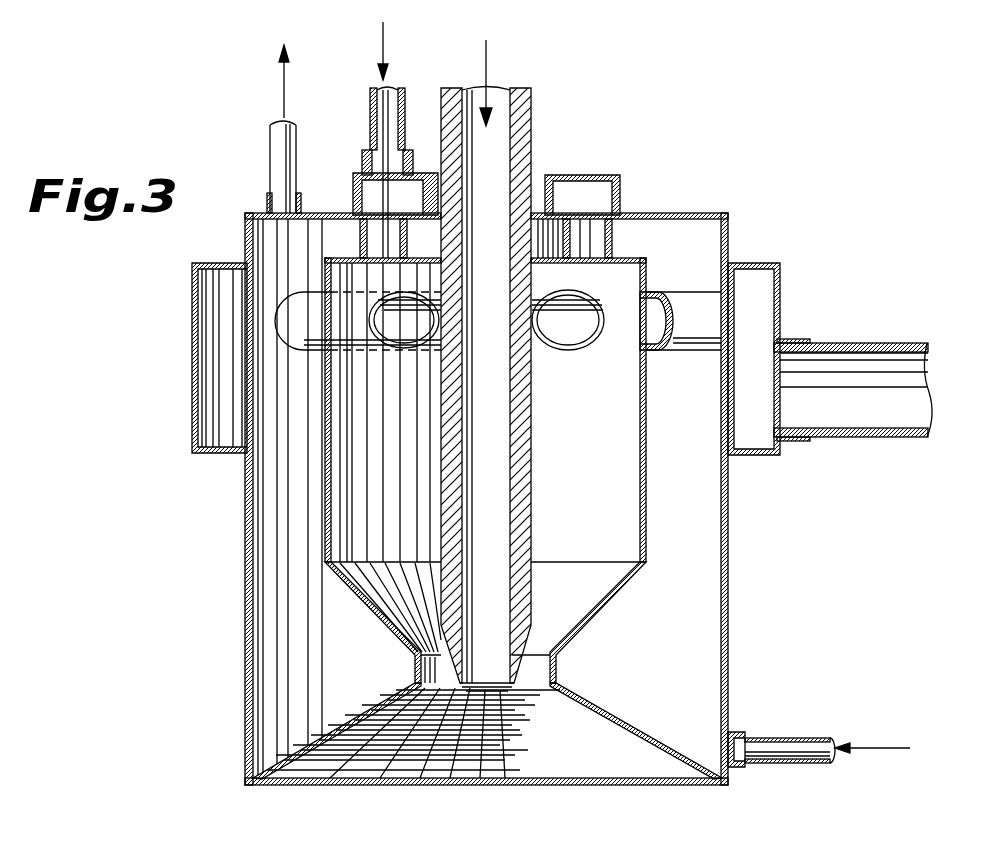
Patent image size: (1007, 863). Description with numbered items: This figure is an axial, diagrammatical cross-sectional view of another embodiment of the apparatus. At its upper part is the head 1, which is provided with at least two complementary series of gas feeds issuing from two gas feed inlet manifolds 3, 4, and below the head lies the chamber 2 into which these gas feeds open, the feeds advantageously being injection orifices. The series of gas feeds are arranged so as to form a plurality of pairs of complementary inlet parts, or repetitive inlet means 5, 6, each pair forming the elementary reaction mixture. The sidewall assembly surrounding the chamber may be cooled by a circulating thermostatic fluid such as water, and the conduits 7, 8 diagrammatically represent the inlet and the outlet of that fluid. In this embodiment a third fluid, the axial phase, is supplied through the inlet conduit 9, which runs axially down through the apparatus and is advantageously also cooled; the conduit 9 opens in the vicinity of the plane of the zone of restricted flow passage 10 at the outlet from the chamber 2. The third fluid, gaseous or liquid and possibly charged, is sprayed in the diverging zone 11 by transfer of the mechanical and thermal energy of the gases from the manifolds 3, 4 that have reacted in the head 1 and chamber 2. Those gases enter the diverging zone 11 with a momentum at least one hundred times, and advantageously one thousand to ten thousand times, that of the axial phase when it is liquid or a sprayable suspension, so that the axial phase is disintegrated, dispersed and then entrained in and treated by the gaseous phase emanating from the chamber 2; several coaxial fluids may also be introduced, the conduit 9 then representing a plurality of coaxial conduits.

The head 1 is at (628, 272).
The chamber 2 is at (600, 497).
The gas feed inlet manifold 3 is at (823, 405).
The gas feed inlet manifold 4 is at (383, 128).
The repetitive inlet means 5 is at (593, 228).
The repetitive inlet means 6 is at (700, 293).
The conduit 7 is at (795, 750).
The conduit 8 is at (276, 147).
The inlet conduit 9 is at (502, 138).
The zone of restricted flow passage 10 is at (435, 670).
The diverging zone 11 is at (455, 770).